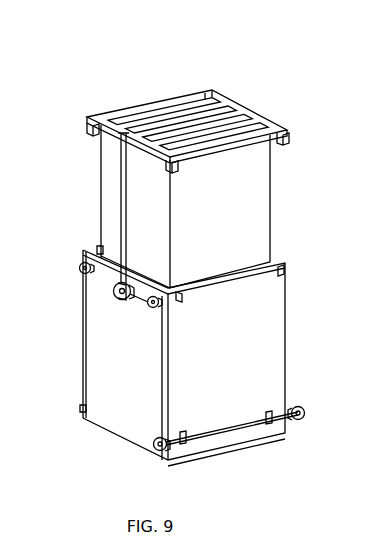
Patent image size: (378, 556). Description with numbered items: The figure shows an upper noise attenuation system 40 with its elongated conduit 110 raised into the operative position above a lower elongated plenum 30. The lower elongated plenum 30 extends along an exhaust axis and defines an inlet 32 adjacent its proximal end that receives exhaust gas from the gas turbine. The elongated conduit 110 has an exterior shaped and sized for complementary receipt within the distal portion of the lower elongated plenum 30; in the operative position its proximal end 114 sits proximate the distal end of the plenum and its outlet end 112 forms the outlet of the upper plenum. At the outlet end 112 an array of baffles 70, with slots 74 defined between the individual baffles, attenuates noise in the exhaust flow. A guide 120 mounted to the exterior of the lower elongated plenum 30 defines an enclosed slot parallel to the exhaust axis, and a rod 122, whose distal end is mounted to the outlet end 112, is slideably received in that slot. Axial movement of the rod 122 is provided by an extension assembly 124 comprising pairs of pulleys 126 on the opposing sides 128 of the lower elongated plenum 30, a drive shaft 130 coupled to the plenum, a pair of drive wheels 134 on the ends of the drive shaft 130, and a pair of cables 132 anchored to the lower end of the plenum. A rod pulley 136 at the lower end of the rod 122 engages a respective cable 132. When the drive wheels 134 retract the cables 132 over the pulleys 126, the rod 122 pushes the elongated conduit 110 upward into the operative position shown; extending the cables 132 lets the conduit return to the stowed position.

The upper noise attenuation system 40 is at (302, 72).
The array of baffles 70 is at (188, 100).
The slots 74 is at (140, 106).
The outlet end 112 is at (189, 93).
The elongated conduit 110 is at (263, 166).
The rod 122 is at (121, 175).
The guide 120 is at (98, 247).
The lower elongated plenum 30 is at (276, 340).
The opposing sides 128 is at (88, 352).
The pulleys 126 is at (80, 267).
The rod pulley 136 is at (128, 284).
The proximal end 114 is at (133, 264).
The cables 132 is at (134, 304).
The drive shaft 130 is at (206, 434).
The drive wheels 134 is at (154, 441).
The inlet 32 is at (266, 440).
The extension assembly 124 is at (235, 455).